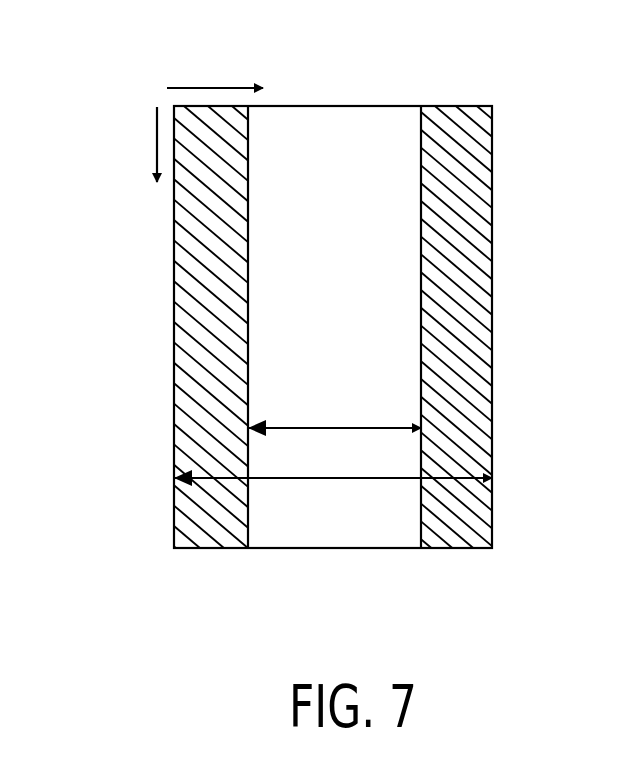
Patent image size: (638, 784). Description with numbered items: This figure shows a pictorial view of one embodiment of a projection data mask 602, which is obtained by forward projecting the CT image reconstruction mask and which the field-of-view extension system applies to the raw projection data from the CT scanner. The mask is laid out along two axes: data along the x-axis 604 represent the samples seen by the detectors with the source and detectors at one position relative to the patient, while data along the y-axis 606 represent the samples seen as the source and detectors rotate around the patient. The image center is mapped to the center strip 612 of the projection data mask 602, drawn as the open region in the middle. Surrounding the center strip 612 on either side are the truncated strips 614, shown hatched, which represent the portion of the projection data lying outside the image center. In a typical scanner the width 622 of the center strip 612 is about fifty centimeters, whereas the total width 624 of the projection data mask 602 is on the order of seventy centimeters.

The projection data mask 602 is at (290, 365).
The x-axis 604 is at (204, 87).
The y-axis 606 is at (157, 142).
The center strip 612 is at (375, 552).
The truncated strips 614 is at (212, 535).
The width of the center strip 622 is at (290, 428).
The total width of the projection data mask 624 is at (323, 478).